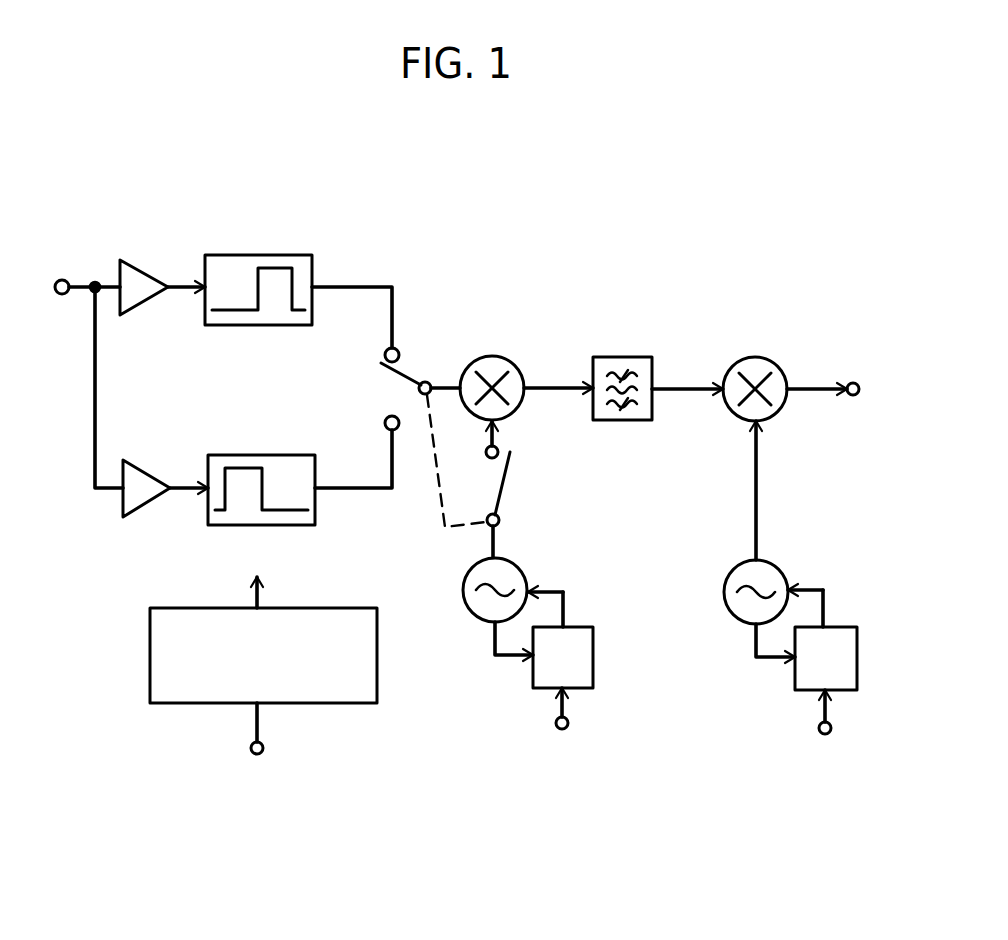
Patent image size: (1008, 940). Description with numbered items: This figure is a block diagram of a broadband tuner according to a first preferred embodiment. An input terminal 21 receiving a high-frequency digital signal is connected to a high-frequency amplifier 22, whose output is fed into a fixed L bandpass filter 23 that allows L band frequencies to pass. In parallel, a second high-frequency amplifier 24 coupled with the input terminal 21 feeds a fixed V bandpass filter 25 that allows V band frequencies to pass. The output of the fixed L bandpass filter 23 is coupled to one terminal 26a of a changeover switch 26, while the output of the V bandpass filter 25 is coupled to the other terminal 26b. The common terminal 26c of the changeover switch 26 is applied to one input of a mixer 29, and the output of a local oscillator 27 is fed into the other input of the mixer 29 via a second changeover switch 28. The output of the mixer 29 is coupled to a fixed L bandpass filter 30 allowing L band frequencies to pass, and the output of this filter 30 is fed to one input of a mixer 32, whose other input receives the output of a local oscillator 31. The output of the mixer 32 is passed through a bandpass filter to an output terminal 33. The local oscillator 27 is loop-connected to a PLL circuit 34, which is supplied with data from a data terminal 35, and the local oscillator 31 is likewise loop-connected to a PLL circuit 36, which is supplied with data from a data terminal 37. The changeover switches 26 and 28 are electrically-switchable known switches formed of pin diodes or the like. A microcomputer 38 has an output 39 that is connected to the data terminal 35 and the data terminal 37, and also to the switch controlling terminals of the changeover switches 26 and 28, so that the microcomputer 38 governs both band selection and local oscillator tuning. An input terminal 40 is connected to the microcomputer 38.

The input terminal 21 is at (63, 279).
The high-frequency amplifier 22 is at (145, 263).
The fixed L bandpass filter 23 is at (260, 252).
The high-frequency amplifier 24 is at (147, 463).
The fixed V bandpass filter 25 is at (258, 453).
The changeover switch 26 is at (412, 362).
The terminal 26a is at (383, 347).
The terminal 26b is at (385, 420).
The common terminal 26c is at (432, 380).
The local oscillator 27 is at (518, 562).
The changeover switch 28 is at (510, 470).
The mixer 29 is at (517, 360).
The fixed L bandpass filter 30 is at (625, 355).
The local oscillator 31 is at (782, 568).
The mixer 32 is at (772, 355).
The output terminal 33 is at (857, 380).
The PLL circuit 34 is at (595, 652).
The data terminal 35 is at (568, 728).
The PLL circuit 36 is at (793, 680).
The data terminal 37 is at (818, 735).
The microcomputer 38 is at (380, 662).
The output 39 is at (267, 597).
The input terminal 40 is at (268, 753).